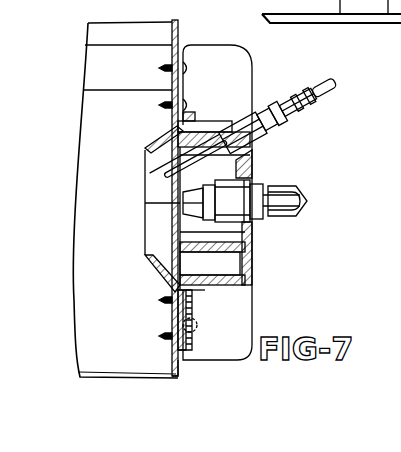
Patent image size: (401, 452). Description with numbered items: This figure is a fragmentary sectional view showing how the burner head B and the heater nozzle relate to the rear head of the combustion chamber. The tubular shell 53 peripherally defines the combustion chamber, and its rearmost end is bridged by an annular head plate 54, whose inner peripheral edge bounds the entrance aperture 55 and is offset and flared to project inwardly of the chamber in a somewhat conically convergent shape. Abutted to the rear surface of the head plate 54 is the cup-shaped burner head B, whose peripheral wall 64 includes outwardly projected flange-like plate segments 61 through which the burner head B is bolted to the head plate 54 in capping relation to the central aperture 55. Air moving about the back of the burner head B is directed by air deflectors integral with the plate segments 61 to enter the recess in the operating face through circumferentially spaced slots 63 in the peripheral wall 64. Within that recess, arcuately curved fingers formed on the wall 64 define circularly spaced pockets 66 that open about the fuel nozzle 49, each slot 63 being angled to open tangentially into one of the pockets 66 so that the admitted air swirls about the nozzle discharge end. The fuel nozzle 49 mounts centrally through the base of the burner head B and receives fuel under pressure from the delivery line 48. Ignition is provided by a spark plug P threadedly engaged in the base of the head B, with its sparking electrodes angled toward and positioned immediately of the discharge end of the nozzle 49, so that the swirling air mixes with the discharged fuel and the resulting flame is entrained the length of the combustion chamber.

The tubular shell 53 is at (73, 262).
The plate segments 61 is at (178, 52).
The slots 63 is at (198, 120).
The peripheral wall 64 is at (218, 128).
The spark plug P is at (260, 110).
The fuel nozzle 49 is at (242, 190).
The delivery line 48 is at (277, 188).
The entrance aperture 55 is at (148, 243).
The pockets 66 is at (213, 268).
The annular head plate 54 is at (172, 370).
The burner head B is at (262, 240).